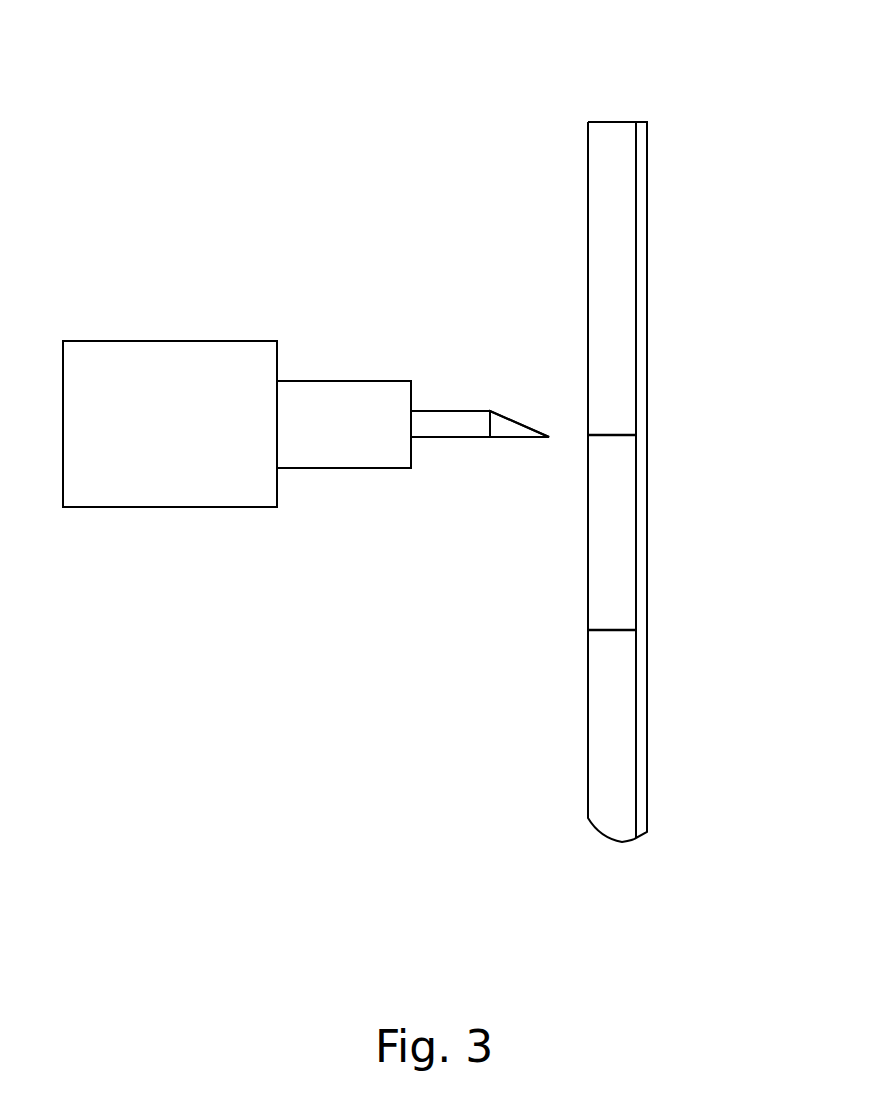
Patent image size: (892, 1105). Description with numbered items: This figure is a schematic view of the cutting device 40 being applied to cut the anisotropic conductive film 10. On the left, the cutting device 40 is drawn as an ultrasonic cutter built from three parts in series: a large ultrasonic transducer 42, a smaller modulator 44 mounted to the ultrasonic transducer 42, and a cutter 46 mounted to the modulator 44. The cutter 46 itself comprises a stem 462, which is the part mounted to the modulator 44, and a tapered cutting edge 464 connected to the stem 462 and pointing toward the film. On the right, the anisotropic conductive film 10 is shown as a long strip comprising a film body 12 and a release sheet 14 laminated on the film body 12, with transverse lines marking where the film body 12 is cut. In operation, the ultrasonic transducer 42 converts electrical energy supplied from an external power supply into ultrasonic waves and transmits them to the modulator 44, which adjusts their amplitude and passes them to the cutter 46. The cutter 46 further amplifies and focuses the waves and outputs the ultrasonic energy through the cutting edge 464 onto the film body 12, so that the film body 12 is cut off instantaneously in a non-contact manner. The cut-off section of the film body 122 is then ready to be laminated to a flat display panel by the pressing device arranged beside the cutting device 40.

The anisotropic conductive film 10 is at (648, 408).
The film body 12 is at (620, 130).
The release sheet 14 is at (640, 257).
The film body 122 is at (618, 535).
The cutting device 40 is at (170, 507).
The ultrasonic transducer 42 is at (145, 372).
The modulator 44 is at (339, 402).
The cutter 46 is at (467, 411).
The stem 462 is at (441, 427).
The cutting edge 464 is at (514, 432).